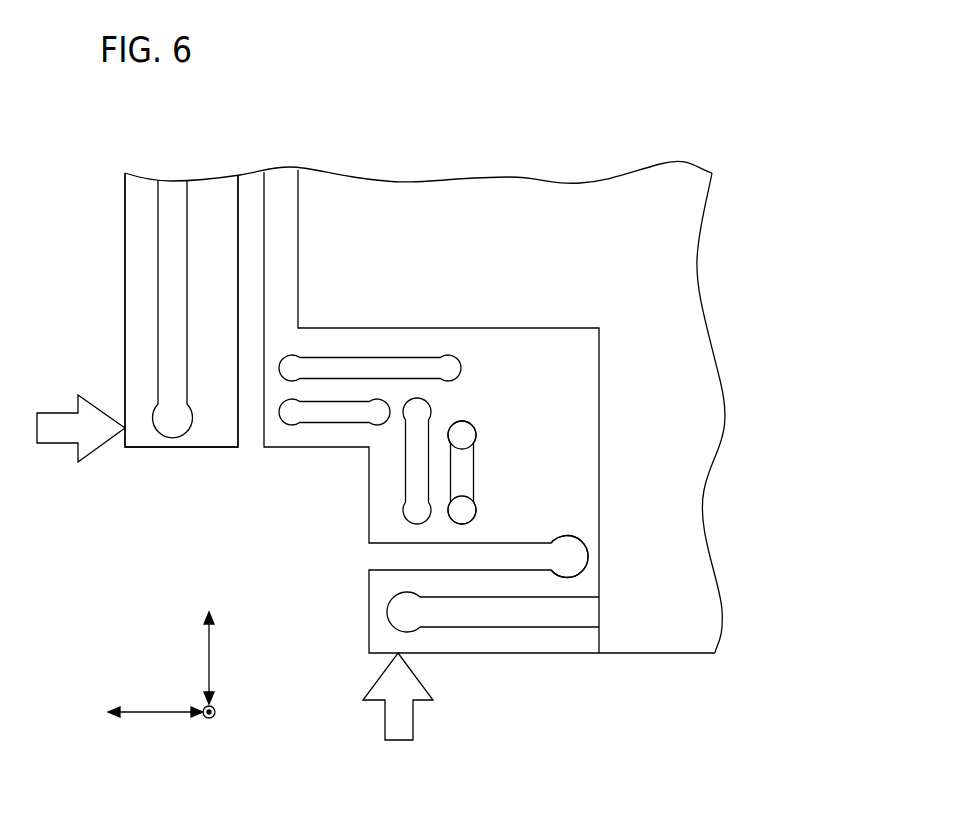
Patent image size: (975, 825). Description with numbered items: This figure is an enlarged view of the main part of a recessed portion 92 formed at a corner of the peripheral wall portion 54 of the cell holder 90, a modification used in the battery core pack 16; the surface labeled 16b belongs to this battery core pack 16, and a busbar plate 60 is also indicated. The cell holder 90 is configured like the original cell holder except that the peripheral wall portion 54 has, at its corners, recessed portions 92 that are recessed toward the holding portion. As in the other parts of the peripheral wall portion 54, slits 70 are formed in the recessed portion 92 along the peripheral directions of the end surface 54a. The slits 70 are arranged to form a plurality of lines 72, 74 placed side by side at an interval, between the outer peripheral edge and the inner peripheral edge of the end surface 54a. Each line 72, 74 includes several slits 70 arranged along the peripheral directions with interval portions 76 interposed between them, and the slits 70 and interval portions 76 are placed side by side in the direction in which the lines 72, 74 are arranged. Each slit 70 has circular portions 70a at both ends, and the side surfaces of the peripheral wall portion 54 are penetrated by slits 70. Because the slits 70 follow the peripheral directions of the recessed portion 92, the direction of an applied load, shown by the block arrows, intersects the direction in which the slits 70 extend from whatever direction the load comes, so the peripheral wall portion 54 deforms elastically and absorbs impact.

The second main surface of base 16b is at (594, 101).
The battery core pack 16 is at (630, 101).
The cell holder 90 is at (723, 167).
The busbar plate 60 is at (672, 283).
The peripheral wall portion 54 is at (125, 242).
The end surface 54a is at (140, 283).
The slit 70 is at (363, 367).
The circular portion 70a is at (463, 433).
The interval portion 76 is at (418, 388).
The line 74 is at (603, 547).
The line 72 is at (603, 610).
The recessed portion 92 is at (306, 499).